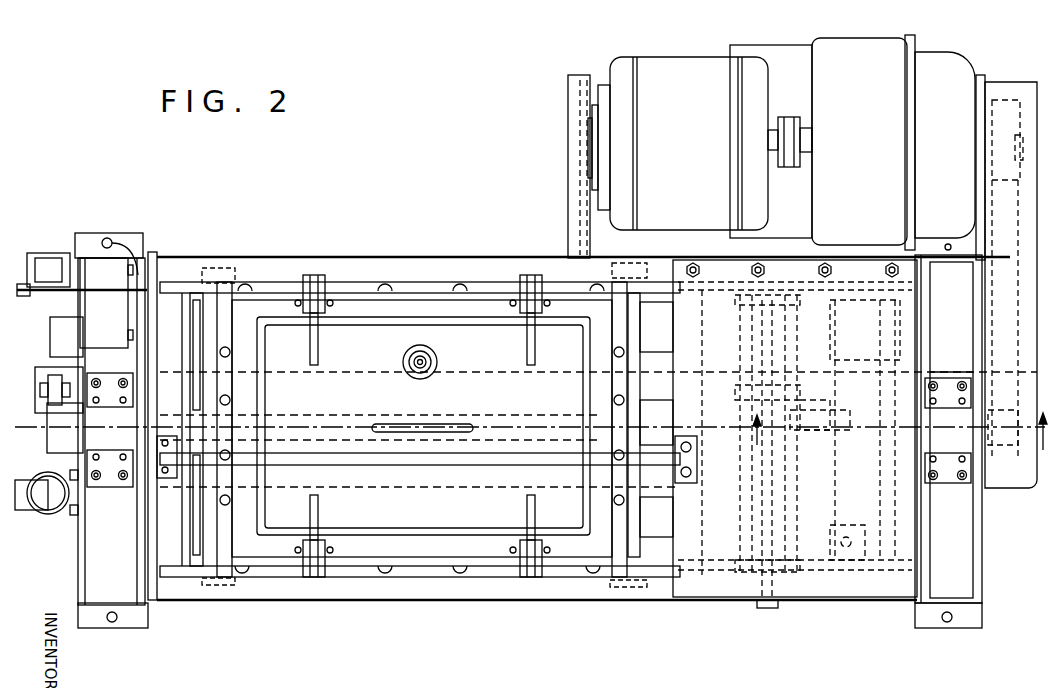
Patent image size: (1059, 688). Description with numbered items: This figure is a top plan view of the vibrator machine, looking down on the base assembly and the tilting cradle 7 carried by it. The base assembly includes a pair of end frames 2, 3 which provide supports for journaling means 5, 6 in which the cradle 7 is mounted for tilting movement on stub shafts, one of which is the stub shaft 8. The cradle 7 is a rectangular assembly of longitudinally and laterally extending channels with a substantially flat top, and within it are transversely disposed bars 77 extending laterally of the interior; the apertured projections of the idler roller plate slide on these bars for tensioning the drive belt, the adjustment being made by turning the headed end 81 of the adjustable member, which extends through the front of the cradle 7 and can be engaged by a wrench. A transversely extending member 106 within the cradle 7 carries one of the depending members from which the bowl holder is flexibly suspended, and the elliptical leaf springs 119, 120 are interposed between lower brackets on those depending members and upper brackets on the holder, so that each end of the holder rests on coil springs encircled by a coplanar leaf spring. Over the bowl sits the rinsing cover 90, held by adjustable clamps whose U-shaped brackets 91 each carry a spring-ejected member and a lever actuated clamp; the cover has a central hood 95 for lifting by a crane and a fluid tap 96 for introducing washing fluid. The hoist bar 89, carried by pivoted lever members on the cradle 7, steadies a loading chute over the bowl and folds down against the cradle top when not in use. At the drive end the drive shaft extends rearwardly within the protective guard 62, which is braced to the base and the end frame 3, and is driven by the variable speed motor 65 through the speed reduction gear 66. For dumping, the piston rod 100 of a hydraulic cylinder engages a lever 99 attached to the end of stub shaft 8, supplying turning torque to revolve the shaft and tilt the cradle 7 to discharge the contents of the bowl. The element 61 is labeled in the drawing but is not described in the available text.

The end frame 2 is at (128, 628).
The end frame 3 is at (957, 628).
The journaling means 5 is at (112, 457).
The journaling means 6 is at (956, 480).
The cradle 7 is at (350, 268).
The stub shaft 8 is at (900, 437).
The gear housing 61 is at (1003, 243).
The protective guard 62 is at (1000, 88).
The variable speed motor 65 is at (677, 68).
The speed reduction gear 66 is at (850, 58).
The transversely disposed bars 77 is at (752, 367).
The headed end 81 is at (772, 610).
The hoist bar 89 is at (300, 462).
The rinsing cover 90 is at (483, 328).
The U-shaped bracket 91 is at (319, 352).
The central hood 95 is at (445, 428).
The fluid tap 96 is at (438, 358).
The lever 99 is at (65, 428).
The piston rod 100 is at (53, 377).
The transversely extending member 106 is at (637, 557).
The elliptical leaf spring 119 is at (232, 247).
The elliptical leaf spring 120 is at (640, 256).